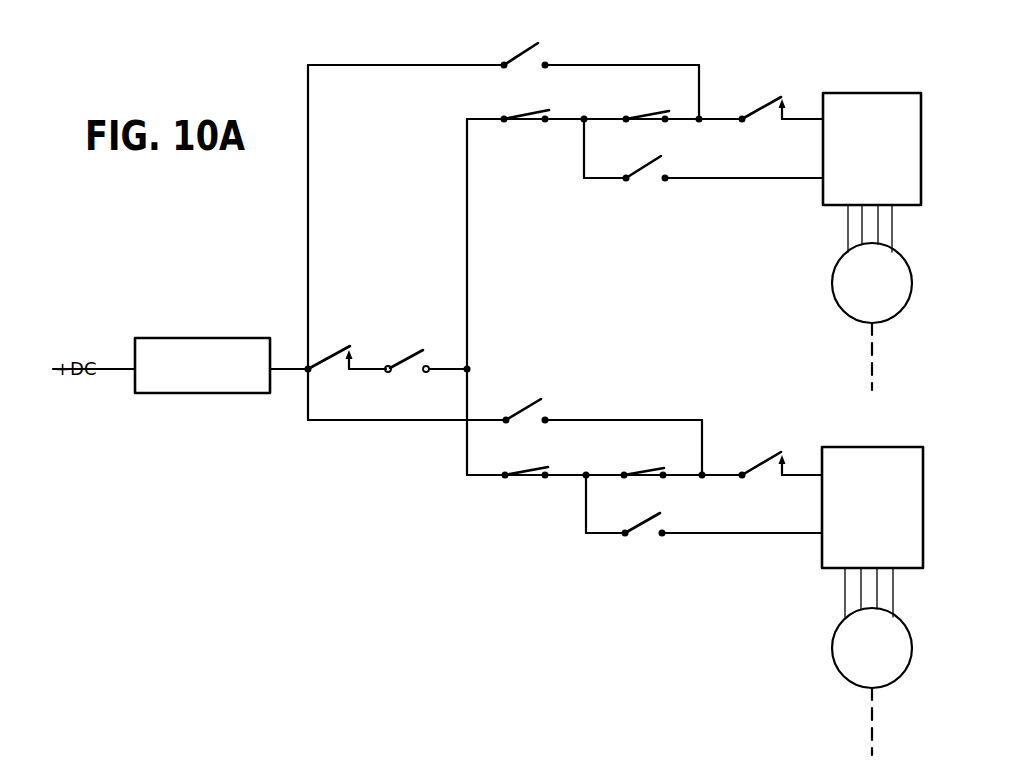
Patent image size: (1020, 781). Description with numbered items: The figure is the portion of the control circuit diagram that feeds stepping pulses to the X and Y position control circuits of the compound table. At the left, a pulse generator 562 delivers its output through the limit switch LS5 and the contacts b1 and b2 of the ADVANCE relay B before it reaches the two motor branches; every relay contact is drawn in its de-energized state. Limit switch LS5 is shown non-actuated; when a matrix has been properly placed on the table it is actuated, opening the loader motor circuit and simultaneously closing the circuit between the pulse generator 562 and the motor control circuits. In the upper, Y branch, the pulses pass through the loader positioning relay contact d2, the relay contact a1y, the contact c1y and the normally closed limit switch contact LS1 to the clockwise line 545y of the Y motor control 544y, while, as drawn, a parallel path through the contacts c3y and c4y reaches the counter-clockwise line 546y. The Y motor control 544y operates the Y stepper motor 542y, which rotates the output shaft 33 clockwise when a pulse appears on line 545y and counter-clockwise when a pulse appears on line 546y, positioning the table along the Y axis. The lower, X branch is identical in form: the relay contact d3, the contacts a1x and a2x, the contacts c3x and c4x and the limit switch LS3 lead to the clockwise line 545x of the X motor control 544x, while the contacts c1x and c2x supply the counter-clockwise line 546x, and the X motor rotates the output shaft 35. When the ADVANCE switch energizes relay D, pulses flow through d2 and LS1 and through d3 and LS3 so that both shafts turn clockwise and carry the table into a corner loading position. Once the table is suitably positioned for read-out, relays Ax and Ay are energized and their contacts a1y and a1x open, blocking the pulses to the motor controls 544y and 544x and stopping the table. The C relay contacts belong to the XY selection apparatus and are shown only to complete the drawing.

The pulse generator 562 is at (208, 336).
The limit switch LS5 is at (330, 352).
The relay contact of ADVANCE relay B b1 is at (410, 352).
The relay contact of ADVANCE relay B b2 is at (425, 374).
The relay contact of loader positioning relay D d2 is at (530, 52).
The relay contact of loader positioning relay D d3 is at (525, 402).
The relay contact of relay Ay a1y is at (510, 123).
The relay contact of relay Cy c1y is at (640, 113).
The relay contact of relay Cy c3y is at (640, 168).
The relay contact of relay Cy c4y is at (662, 182).
The limit switch contact LS1 is at (762, 100).
The line 545y is at (800, 123).
The line 546y is at (797, 182).
The Y motor control 544y is at (872, 149).
The Y stepper motor 542y is at (872, 283).
The output shaft 33 is at (871, 334).
The relay contact of relay Ax a1x is at (515, 481).
The relay contact of relay Ax a2x is at (540, 479).
The relay contact of relay Cx c3x is at (640, 470).
The relay contact of relay Cx c4x is at (661, 480).
The relay contact of relay Cx c1x is at (640, 526).
The relay contact of relay Cx c2x is at (663, 537).
The limit switch contact LS3 is at (772, 458).
The line 545x is at (797, 480).
The line 546x is at (757, 535).
The X motor control 544x is at (872, 567).
The output shaft 35 is at (870, 702).